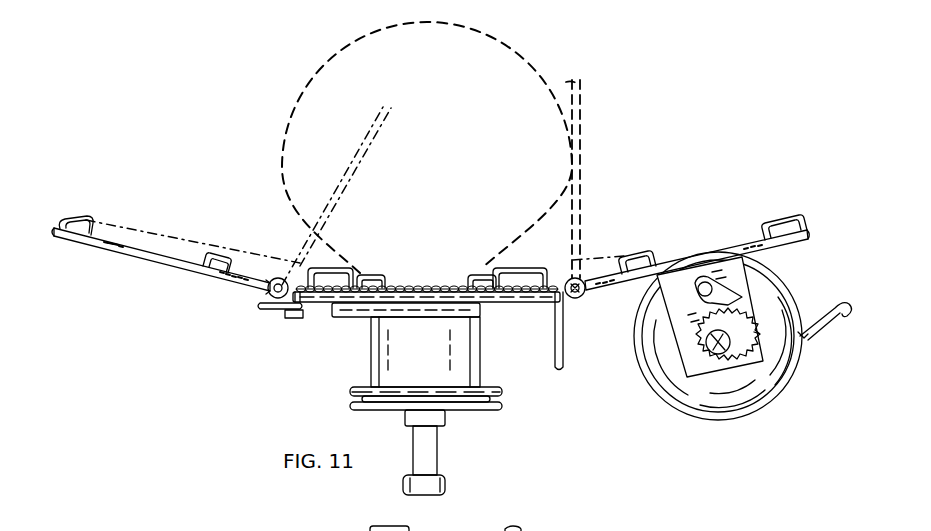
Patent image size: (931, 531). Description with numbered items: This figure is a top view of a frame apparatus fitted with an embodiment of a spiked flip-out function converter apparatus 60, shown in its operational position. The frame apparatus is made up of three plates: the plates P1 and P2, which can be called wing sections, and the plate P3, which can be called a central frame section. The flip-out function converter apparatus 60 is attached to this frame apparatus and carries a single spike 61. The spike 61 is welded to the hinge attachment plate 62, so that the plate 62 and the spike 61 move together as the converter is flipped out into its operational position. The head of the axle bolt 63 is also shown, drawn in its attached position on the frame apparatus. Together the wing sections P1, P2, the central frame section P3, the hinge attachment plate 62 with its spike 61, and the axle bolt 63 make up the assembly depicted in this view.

The flip-out function converter apparatus 60 is at (743, 296).
The spike 61 is at (740, 222).
The hinge attachment plate 62 is at (758, 252).
The axle bolt 63 is at (730, 228).
The plate P1 is at (620, 293).
The plate P2 is at (165, 263).
The plate P3 is at (531, 300).